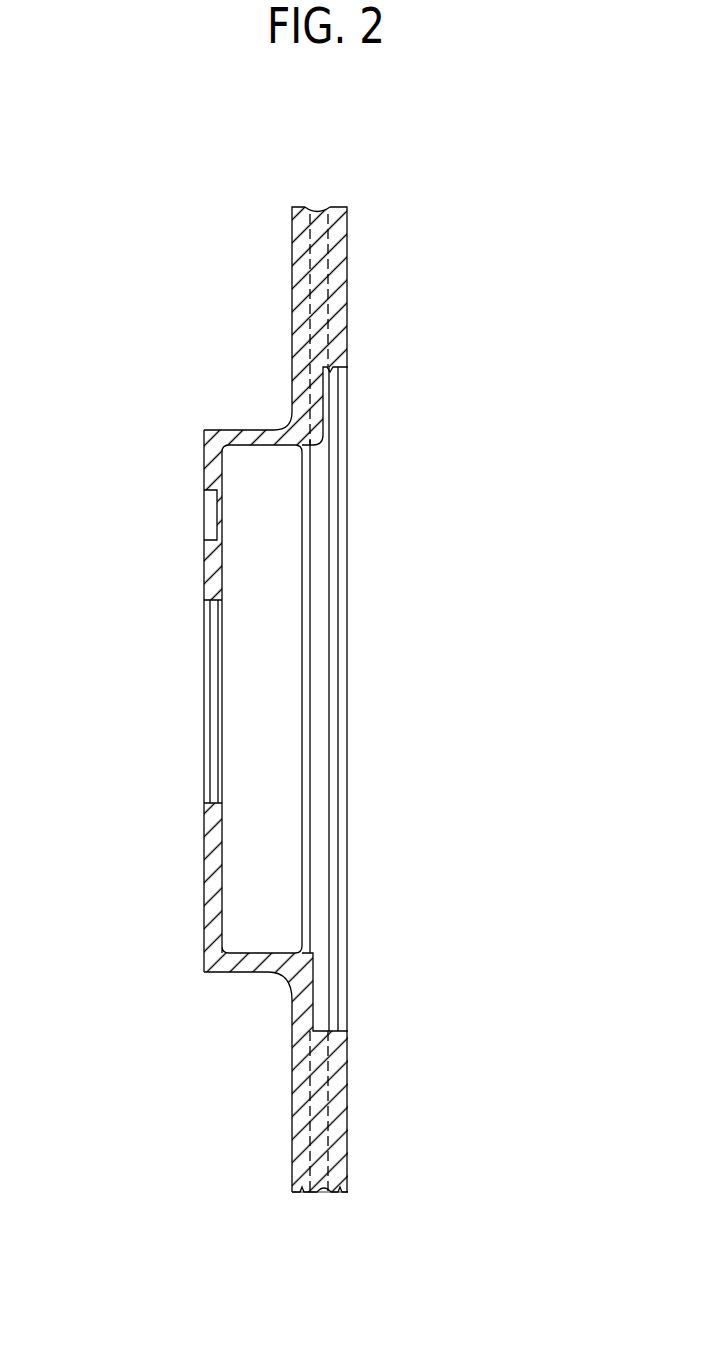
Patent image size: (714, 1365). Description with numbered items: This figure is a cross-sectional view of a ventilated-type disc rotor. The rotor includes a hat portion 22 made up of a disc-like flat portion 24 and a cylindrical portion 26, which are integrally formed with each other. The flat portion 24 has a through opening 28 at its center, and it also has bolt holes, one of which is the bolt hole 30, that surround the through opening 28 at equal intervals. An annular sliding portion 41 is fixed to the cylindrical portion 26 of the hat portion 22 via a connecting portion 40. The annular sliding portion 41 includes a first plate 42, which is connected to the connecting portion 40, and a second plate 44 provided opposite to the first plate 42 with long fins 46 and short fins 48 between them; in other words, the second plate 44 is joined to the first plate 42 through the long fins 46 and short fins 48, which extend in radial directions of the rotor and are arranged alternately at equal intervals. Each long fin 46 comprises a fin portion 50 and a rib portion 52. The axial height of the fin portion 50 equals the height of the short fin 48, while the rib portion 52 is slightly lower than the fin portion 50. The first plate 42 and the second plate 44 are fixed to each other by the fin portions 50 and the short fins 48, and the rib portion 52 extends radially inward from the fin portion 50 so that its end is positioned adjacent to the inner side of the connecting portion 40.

The hat portion 22 is at (127, 920).
The flat portion 24 is at (209, 915).
The cylindrical portion 26 is at (247, 963).
The through opening 28 is at (218, 708).
The bolt hole 30 is at (213, 513).
The connecting portion 40 is at (295, 1020).
The annular sliding portion 41 is at (422, 1247).
The first plate 42 is at (302, 1194).
The second plate 44 is at (345, 1194).
The long fin 46 is at (319, 212).
The short fin 48 is at (323, 1190).
The fin portion 50 is at (320, 327).
The rib portion 52 is at (318, 417).